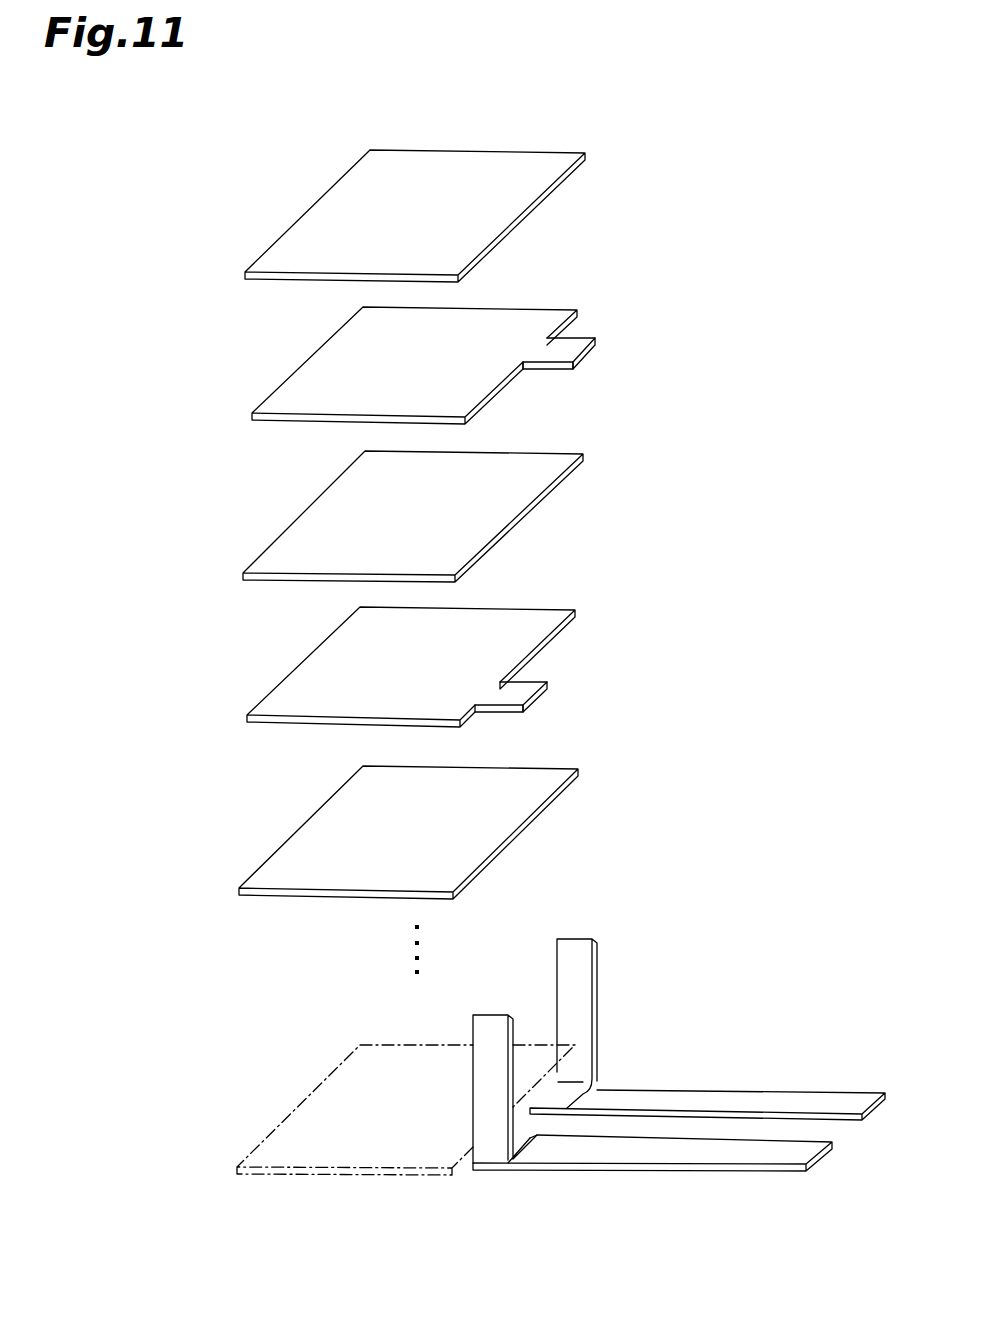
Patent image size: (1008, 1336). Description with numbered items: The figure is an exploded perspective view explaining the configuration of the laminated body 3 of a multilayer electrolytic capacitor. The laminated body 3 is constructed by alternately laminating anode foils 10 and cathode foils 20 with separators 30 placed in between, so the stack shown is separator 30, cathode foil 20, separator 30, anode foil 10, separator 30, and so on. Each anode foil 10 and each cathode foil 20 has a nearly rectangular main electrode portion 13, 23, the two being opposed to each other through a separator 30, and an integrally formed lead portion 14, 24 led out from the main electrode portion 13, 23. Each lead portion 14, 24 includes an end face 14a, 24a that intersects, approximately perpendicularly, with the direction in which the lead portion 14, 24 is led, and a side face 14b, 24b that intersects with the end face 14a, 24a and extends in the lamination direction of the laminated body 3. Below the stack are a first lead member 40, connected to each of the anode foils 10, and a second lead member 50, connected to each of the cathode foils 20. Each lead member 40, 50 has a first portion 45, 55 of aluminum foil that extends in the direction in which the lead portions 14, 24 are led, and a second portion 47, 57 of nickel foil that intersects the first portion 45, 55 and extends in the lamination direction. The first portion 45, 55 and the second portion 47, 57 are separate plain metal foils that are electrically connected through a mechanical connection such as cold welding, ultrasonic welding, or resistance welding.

The laminated body 3 is at (186, 117).
The anode foil 10 is at (498, 607).
The main electrode portion 13 is at (333, 670).
The lead portion 14 is at (560, 698).
The end face 14a is at (541, 693).
The side face 14b is at (498, 708).
The cathode foil 20 is at (500, 308).
The main electrode portion 23 is at (335, 368).
The lead portion 24 is at (607, 328).
The end face 24a is at (589, 353).
The side face 24b is at (597, 340).
The separator 30 is at (288, 228).
The first lead member 40 is at (568, 1232).
The first portion 45 is at (570, 1164).
The second portion 47 is at (490, 1140).
The second lead member 50 is at (683, 970).
The first portion 55 is at (662, 1090).
The second portion 57 is at (597, 992).